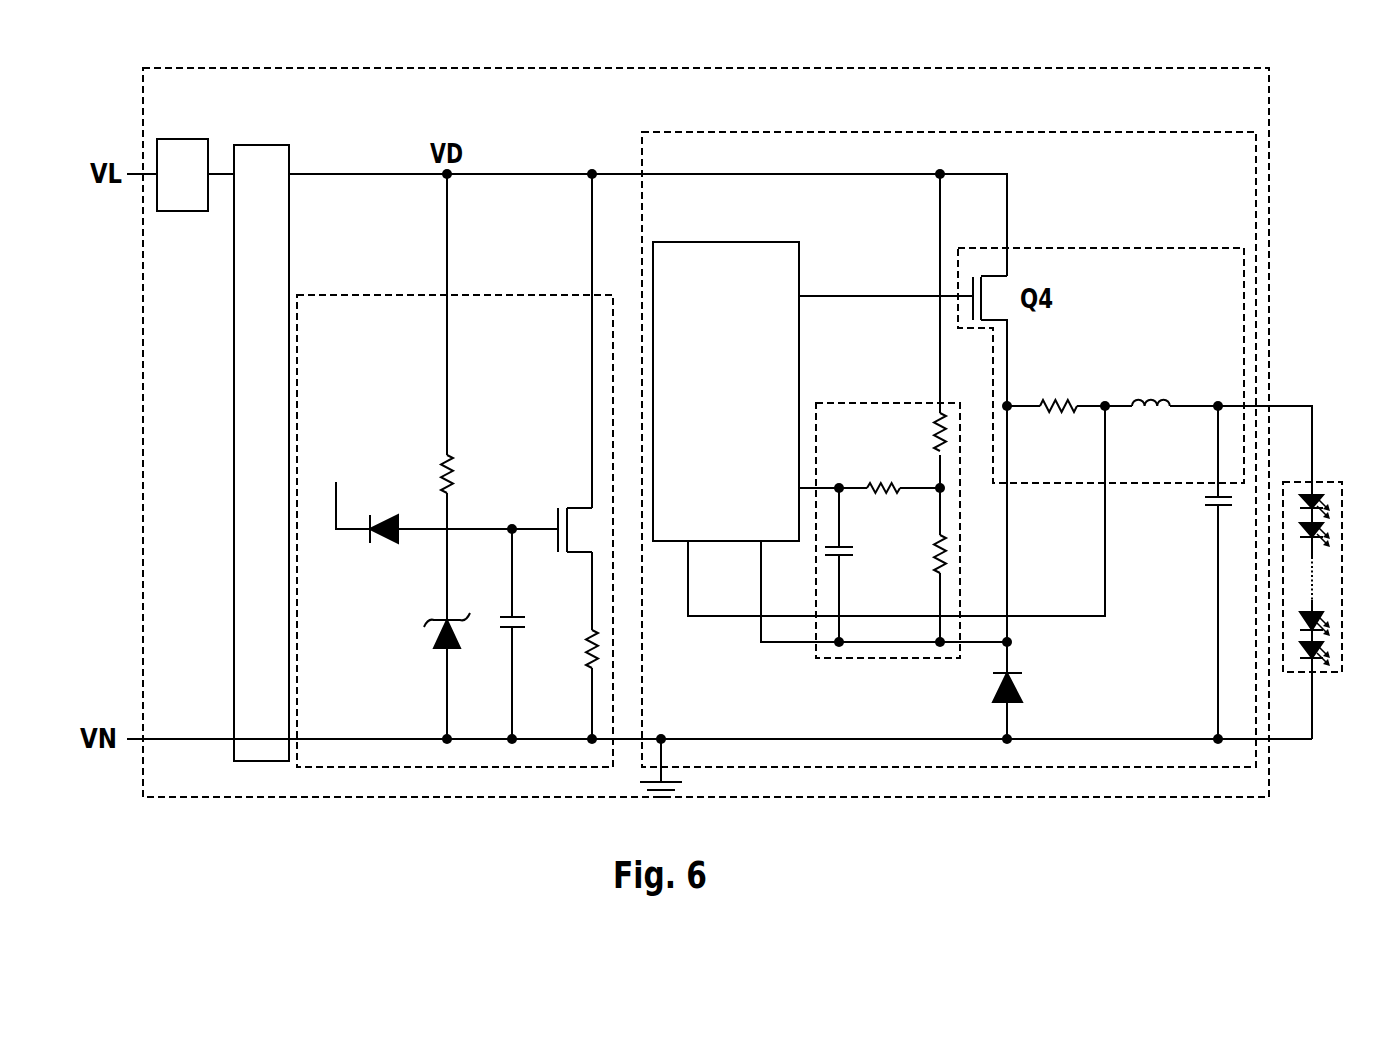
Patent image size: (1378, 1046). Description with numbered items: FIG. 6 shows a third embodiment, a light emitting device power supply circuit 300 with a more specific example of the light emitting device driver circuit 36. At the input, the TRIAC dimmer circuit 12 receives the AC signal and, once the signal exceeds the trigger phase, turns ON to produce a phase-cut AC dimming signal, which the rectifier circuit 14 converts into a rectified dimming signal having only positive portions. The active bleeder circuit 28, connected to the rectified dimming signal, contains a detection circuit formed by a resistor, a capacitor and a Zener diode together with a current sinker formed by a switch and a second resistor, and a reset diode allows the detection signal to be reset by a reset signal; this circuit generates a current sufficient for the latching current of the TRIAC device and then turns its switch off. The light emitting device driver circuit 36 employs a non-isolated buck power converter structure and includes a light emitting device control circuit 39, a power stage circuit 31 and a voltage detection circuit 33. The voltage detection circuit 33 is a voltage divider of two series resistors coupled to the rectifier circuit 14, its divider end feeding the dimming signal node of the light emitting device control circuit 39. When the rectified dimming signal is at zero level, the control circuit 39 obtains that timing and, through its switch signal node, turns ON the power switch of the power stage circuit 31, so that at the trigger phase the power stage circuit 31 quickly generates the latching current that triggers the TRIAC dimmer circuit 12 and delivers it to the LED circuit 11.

The light emitting device power supply circuit 300 is at (205, 107).
The TRIAC dimmer circuit 12 is at (197, 189).
The rectifier circuit 14 is at (278, 469).
The active bleeder circuit 28 is at (338, 335).
The light emitting device driver circuit 36 is at (1228, 175).
The light emitting device control circuit 39 is at (693, 278).
The power stage circuit 31 is at (1230, 288).
The voltage detection circuit 33 is at (858, 440).
The LED circuit 11 is at (1318, 482).